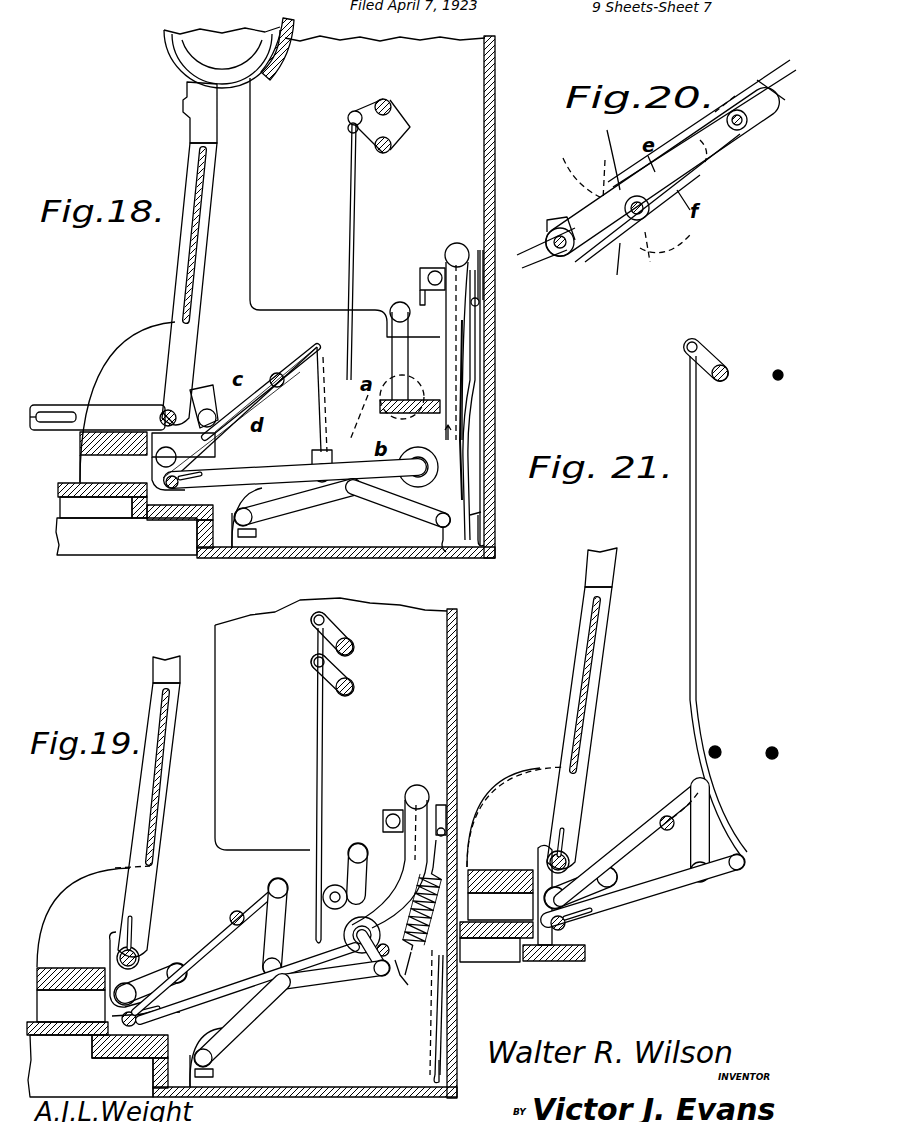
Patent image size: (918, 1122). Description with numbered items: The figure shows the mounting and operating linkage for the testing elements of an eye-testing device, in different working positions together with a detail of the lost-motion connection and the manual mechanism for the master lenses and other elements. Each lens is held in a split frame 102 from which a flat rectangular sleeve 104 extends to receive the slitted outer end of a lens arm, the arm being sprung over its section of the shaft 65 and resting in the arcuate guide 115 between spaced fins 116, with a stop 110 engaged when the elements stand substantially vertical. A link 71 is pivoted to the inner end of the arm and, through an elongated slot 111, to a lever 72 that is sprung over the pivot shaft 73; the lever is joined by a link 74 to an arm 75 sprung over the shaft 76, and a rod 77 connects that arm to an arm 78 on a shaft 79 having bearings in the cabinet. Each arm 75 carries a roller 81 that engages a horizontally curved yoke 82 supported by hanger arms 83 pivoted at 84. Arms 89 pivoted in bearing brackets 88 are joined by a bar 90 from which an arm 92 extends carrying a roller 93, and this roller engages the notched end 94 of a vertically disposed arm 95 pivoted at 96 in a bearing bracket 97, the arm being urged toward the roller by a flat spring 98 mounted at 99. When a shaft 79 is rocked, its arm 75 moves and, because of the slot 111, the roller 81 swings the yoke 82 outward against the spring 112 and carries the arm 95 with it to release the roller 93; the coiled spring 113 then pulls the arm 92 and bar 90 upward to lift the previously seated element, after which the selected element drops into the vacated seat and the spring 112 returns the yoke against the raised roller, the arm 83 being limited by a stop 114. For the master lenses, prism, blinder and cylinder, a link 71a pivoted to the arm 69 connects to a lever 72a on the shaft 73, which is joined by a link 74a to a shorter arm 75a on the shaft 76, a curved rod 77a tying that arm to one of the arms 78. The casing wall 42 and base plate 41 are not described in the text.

In FIG. 18, the base plate 41 is at (333, 560).
In FIG. 21, the base plate 41 is at (590, 953).
In FIG. 19, the base plate 41 is at (290, 1100).
In FIG. 18, the casing wall 42 is at (495, 478).
In FIG. 19, the casing wall 42 is at (458, 1030).
In FIG. 18, the shaft 65 is at (162, 412).
In FIG. 21, the shaft 65 is at (558, 851).
In FIG. 19, the shaft 65 is at (138, 948).
In FIG. 18, the arm 69 is at (185, 250).
In FIG. 20, the arm 69 is at (560, 228).
In FIG. 21, the arm 69 is at (592, 724).
In FIG. 19, the arm 69 is at (145, 796).
In FIG. 18, the link 71 is at (207, 408).
In FIG. 20, the link 71 is at (590, 252).
In FIG. 19, the link 71 is at (172, 965).
In FIG. 21, the link 71a is at (582, 880).
In FIG. 18, the lever 72 is at (305, 350).
In FIG. 20, the lever 72 is at (700, 162).
In FIG. 19, the lever 72 is at (214, 936).
In FIG. 21, the lever 72a is at (650, 822).
In FIG. 18, the pivot shaft 73 is at (275, 374).
In FIG. 20, the pivot shaft 73 is at (744, 126).
In FIG. 21, the pivot shaft 73 is at (667, 832).
In FIG. 19, the pivot shaft 73 is at (236, 910).
In FIG. 18, the link 74 is at (312, 404).
In FIG. 19, the link 74 is at (281, 878).
In FIG. 21, the link 74a is at (712, 830).
In FIG. 18, the arm 75 is at (300, 440).
In FIG. 19, the arm 75 is at (226, 990).
In FIG. 21, the arm 75a is at (650, 893).
In FIG. 18, the shaft 76 is at (172, 490).
In FIG. 21, the shaft 76 is at (562, 932).
In FIG. 19, the shaft 76 is at (146, 1017).
In FIG. 18, the rod 77 is at (352, 186).
In FIG. 19, the rod 77 is at (324, 742).
In FIG. 21, the curved rod 77a is at (697, 518).
In FIG. 18, the arm 78 is at (348, 118).
In FIG. 21, the arm 78 is at (708, 360).
In FIG. 19, the arm 78 is at (312, 638).
In FIG. 18, the shaft 79 is at (392, 108).
In FIG. 21, the shaft 79 is at (776, 380).
In FIG. 19, the shaft 79 is at (352, 648).
In FIG. 18, the roller 81 is at (412, 385).
In FIG. 19, the roller 81 is at (366, 925).
In FIG. 18, the yoke 82 is at (440, 406).
In FIG. 19, the yoke 82 is at (378, 990).
In FIG. 18, the hanger arm 83 is at (392, 364).
In FIG. 19, the hanger arm 83 is at (331, 908).
In FIG. 18, the pivot 84 is at (446, 300).
In FIG. 18, the bearing bracket 88 is at (258, 548).
In FIG. 19, the bearing bracket 88 is at (216, 1062).
In FIG. 18, the arm 89 is at (255, 516).
In FIG. 19, the arm 89 is at (262, 1000).
In FIG. 18, the bar 90 is at (355, 494).
In FIG. 19, the bar 90 is at (290, 986).
In FIG. 18, the arm 92 is at (415, 512).
In FIG. 19, the arm 92 is at (336, 980).
In FIG. 18, the roller 93 is at (445, 545).
In FIG. 19, the roller 93 is at (378, 976).
In FIG. 18, the notched end 94 is at (480, 520).
In FIG. 19, the notched end 94 is at (405, 1062).
In FIG. 18, the arm 95 is at (463, 434).
In FIG. 19, the arm 95 is at (442, 1010).
In FIG. 18, the pivot 96 is at (457, 250).
In FIG. 19, the pivot 96 is at (417, 792).
In FIG. 18, the bearing bracket 97 is at (480, 256).
In FIG. 20, the bearing bracket 97 is at (540, 229).
In FIG. 21, the bearing bracket 97 is at (457, 790).
In FIG. 19, the bearing bracket 97 is at (442, 808).
In FIG. 18, the flat spring 98 is at (476, 362).
In FIG. 19, the flat spring 98 is at (486, 1015).
In FIG. 18, the spring mounting 99 is at (480, 302).
In FIG. 20, the spring mounting 99 is at (540, 283).
In FIG. 21, the spring mounting 99 is at (457, 820).
In FIG. 19, the spring mounting 99 is at (445, 826).
In FIG. 18, the frame 102 is at (172, 58).
In FIG. 18, the sleeve 104 is at (190, 127).
In FIG. 21, the sleeve 104 is at (610, 567).
In FIG. 19, the sleeve 104 is at (158, 672).
In FIG. 18, the stop 110 is at (292, 66).
In FIG. 20, the elongated slot 111 is at (635, 222).
In FIG. 18, the spring 112 is at (420, 276).
In FIG. 19, the spring 112 is at (383, 812).
In FIG. 19, the coiled spring 113 is at (450, 985).
In FIG. 19, the stop 114 is at (352, 845).
In FIG. 18, the arcuate guide 115 is at (80, 440).
In FIG. 21, the arcuate guide 115 is at (498, 962).
In FIG. 19, the arcuate guide 115 is at (47, 967).
In FIG. 18, the fin 116 is at (107, 358).
In FIG. 21, the fin 116 is at (533, 775).
In FIG. 19, the fin 116 is at (106, 870).